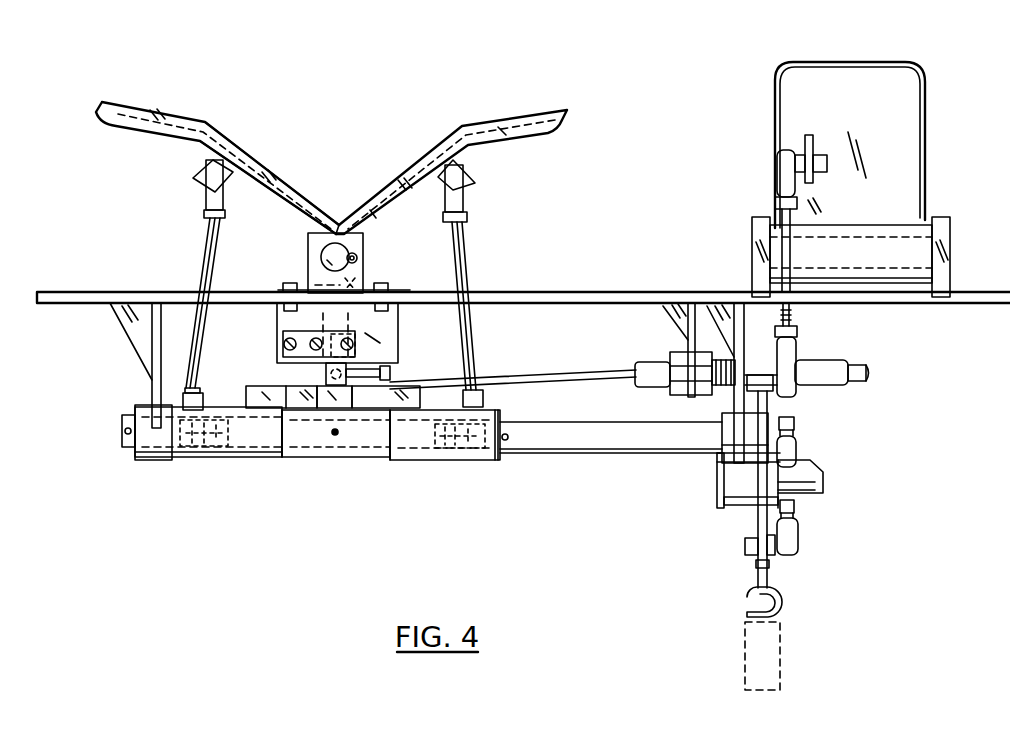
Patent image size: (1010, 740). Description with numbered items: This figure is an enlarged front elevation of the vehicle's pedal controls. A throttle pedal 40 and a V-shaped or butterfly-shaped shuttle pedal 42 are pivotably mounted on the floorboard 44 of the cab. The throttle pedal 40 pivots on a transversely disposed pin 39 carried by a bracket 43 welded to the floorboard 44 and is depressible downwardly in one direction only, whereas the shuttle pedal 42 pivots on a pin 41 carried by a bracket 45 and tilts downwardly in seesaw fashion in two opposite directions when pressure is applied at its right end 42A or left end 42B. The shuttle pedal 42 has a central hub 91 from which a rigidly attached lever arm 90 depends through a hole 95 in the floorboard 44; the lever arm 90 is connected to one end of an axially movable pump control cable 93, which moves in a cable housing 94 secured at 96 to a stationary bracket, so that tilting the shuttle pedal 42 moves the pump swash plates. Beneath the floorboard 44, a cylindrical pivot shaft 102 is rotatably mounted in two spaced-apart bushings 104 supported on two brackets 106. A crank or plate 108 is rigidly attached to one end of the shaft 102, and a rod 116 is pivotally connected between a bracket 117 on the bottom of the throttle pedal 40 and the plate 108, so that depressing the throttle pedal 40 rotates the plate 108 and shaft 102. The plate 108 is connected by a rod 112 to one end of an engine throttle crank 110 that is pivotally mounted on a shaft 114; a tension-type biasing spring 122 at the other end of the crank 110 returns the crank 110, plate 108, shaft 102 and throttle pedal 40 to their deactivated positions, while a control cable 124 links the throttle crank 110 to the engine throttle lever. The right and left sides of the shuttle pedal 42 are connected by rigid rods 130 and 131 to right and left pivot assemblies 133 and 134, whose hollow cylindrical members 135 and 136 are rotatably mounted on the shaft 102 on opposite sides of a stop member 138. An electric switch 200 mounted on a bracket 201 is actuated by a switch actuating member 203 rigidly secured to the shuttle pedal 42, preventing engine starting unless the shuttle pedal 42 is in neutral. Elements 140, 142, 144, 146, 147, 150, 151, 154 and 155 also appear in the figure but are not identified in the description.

The pin 39 is at (946, 246).
The throttle pedal 40 is at (822, 62).
The pin 41 is at (343, 252).
The shuttle pedal 42 is at (159, 107).
The right end 42A is at (212, 122).
The left end 42B is at (500, 120).
The bracket 43 is at (950, 272).
The floorboard 44 is at (67, 292).
The bracket 45 is at (358, 275).
The lever arm 90 is at (326, 372).
The central hub 91 is at (308, 279).
The pump control cable 93 is at (589, 364).
The cable housing 94 is at (829, 361).
The hole 95 is at (406, 296).
The securing point 96 is at (673, 352).
The pivot shaft 102 is at (585, 454).
The bushing 104 is at (152, 460).
The bracket 106 is at (152, 382).
The plate 108 is at (758, 512).
The engine throttle crank 110 is at (758, 572).
The rod 112 is at (796, 448).
The shaft 114 is at (818, 486).
The rod 116 is at (777, 180).
The bracket 117 is at (812, 150).
The biasing spring 122 is at (780, 640).
The control cable 124 is at (799, 545).
The rod 130 is at (207, 233).
The rod 131 is at (467, 233).
The right pivot assembly 133 is at (215, 461).
The left pivot assembly 134 is at (457, 467).
The hollow cylindrical member 135 is at (240, 459).
The hollow cylindrical member 136 is at (421, 461).
The stop member 138 is at (358, 467).
The partition wall 140 is at (376, 460).
The port 142 is at (334, 436).
The spool 144 is at (325, 402).
The mounting block 146 is at (255, 388).
The mounting block 147 is at (413, 397).
The valve 150 is at (210, 447).
The valve 151 is at (468, 451).
The clevis 154 is at (194, 174).
The clevis 155 is at (477, 180).
The electric switch 200 is at (313, 333).
The bracket 201 is at (398, 317).
The switch actuating member 203 is at (345, 338).